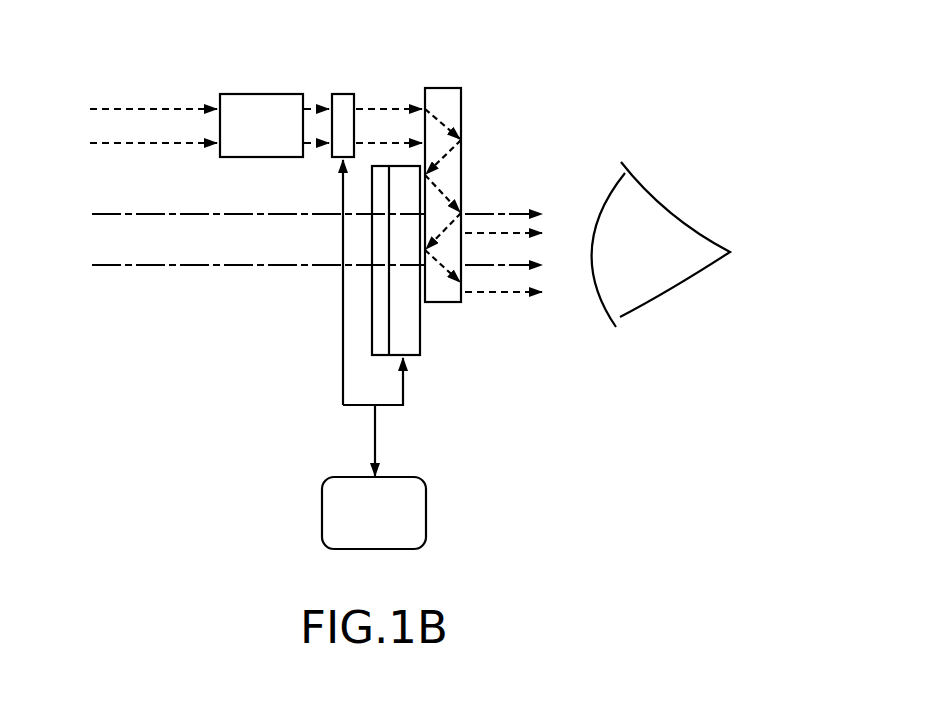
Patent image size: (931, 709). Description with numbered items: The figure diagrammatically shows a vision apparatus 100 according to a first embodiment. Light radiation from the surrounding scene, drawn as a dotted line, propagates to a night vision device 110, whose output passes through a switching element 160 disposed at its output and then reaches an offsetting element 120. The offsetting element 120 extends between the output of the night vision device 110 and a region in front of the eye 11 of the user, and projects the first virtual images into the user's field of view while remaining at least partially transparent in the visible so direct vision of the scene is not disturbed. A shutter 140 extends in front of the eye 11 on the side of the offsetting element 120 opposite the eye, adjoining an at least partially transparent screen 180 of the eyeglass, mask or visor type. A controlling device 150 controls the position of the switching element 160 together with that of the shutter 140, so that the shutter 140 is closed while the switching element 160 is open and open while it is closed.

The vision apparatus 100 is at (572, 86).
The night vision device 110 is at (267, 102).
The switching element 160 is at (345, 100).
The offsetting element 120 is at (443, 100).
The shutter 140 is at (412, 324).
The screen 180 is at (378, 323).
The controlling device 150 is at (330, 506).
The eye 11 is at (646, 193).